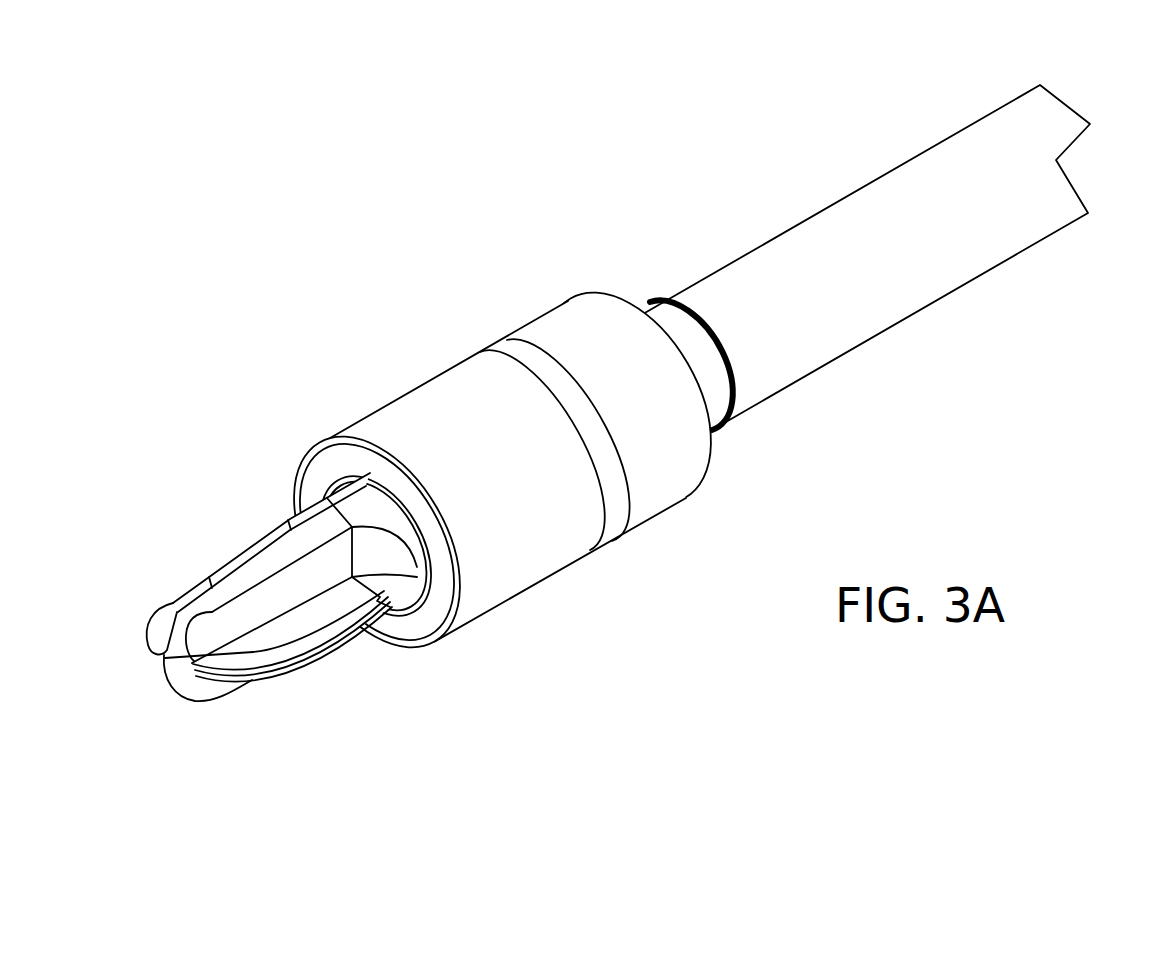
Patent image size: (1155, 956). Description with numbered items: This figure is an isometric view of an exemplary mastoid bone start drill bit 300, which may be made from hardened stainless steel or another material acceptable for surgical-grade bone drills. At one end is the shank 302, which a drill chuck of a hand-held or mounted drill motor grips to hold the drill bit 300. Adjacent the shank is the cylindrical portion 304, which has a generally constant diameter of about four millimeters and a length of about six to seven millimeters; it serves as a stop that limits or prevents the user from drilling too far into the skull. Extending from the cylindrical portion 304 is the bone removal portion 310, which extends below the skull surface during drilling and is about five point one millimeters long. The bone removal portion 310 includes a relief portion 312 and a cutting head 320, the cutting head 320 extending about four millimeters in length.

The mastoid bone start drill bit 300 is at (358, 355).
The shank 302 is at (862, 207).
The cylindrical portion 304 is at (548, 313).
The bone removal portion 310 is at (250, 622).
The relief portion 312 is at (437, 583).
The cutting head 320 is at (196, 702).